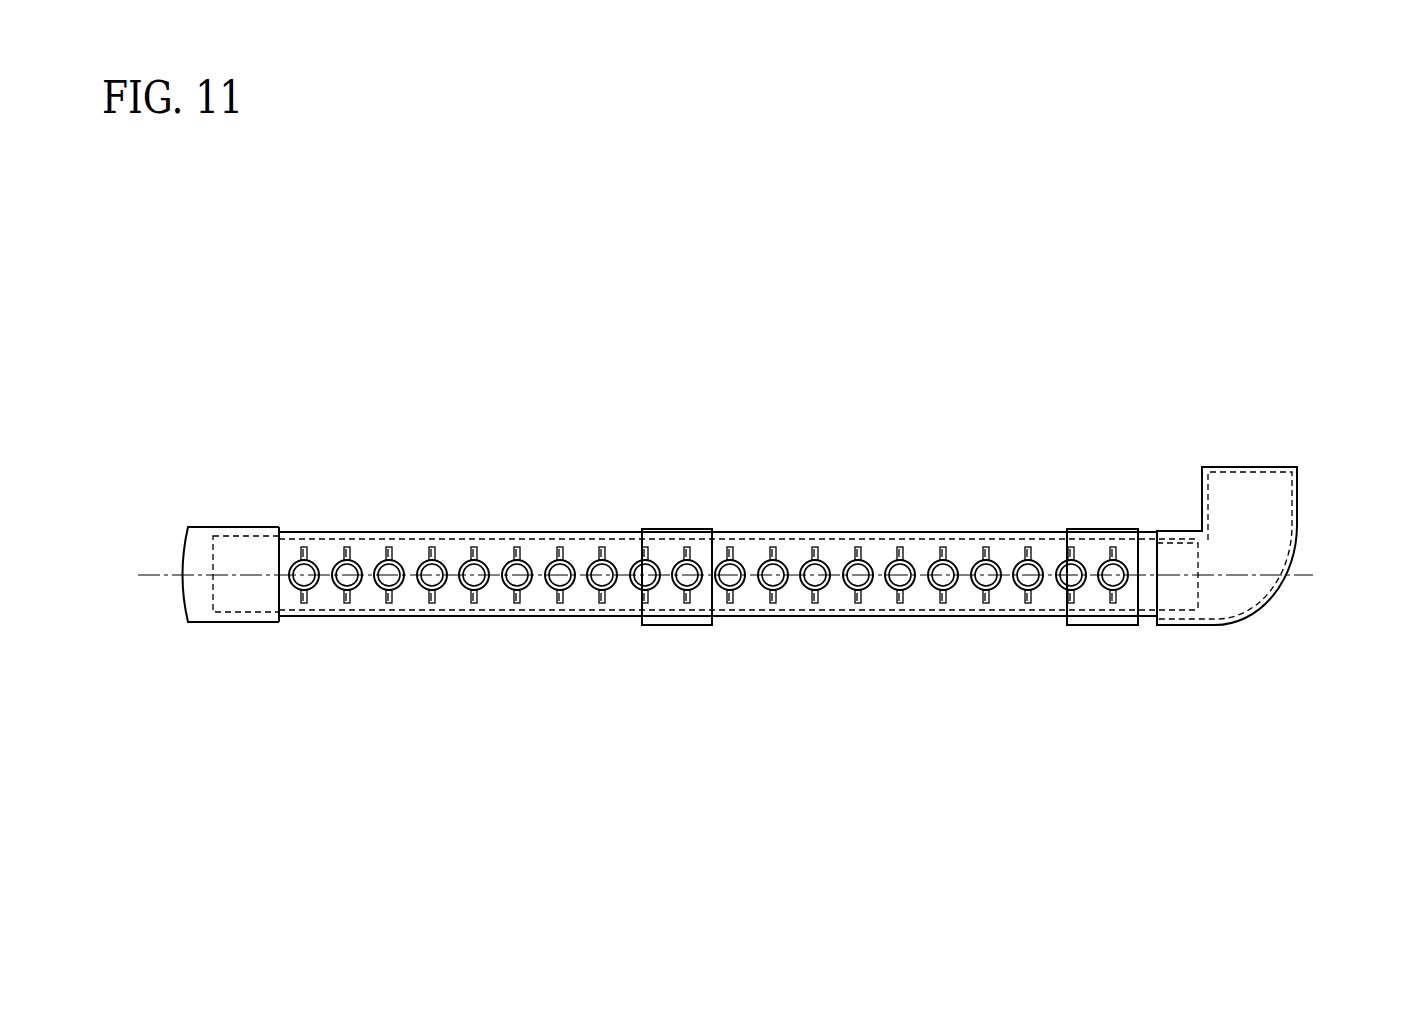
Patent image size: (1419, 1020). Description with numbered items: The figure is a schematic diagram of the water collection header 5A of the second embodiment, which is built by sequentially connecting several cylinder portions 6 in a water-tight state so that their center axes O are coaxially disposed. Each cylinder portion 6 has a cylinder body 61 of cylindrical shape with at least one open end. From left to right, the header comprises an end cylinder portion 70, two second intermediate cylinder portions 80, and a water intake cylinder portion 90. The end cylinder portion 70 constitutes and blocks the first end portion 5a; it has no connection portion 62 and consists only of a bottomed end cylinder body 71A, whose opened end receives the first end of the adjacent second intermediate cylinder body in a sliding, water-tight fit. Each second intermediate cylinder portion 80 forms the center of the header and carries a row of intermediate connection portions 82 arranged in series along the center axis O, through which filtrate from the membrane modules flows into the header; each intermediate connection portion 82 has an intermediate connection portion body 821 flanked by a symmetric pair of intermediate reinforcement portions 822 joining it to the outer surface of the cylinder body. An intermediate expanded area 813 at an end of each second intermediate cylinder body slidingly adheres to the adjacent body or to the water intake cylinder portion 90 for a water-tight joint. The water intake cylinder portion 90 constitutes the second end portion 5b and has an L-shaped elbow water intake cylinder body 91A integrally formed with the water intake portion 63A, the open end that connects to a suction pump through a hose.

The water collection header 5A is at (1130, 322).
The first end portion 5a is at (180, 575).
The second end portion 5b is at (1288, 578).
The cylinder portion 6 is at (791, 580).
The cylinder body 61 is at (1286, 545).
The connection portion 62 is at (728, 474).
The water intake portion 63A is at (1247, 466).
The end cylinder portion 70 is at (229, 655).
The end cylinder body 71A is at (200, 612).
The second intermediate cylinder portion 80 is at (517, 636).
The intermediate expanded area 813 is at (675, 528).
The intermediate connection portion 82 is at (332, 540).
The intermediate connection portion body 821 is at (332, 616).
The intermediate reinforcement portion 822 is at (302, 547).
The water intake cylinder portion 90 is at (1286, 542).
The water intake cylinder body 91A is at (1287, 518).
The center axis O is at (1300, 582).